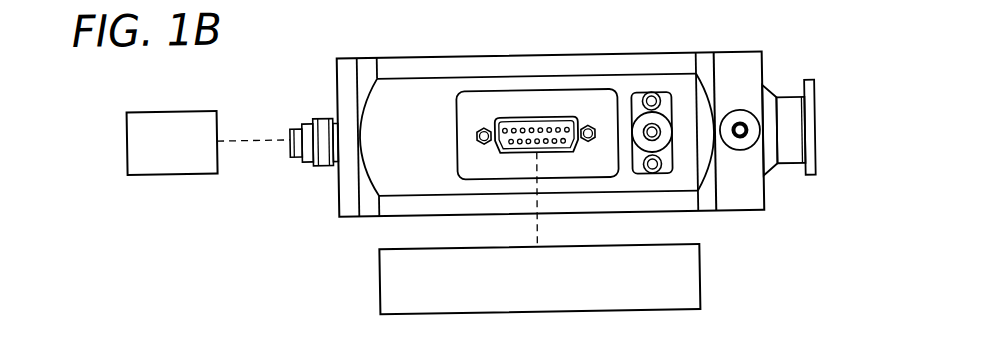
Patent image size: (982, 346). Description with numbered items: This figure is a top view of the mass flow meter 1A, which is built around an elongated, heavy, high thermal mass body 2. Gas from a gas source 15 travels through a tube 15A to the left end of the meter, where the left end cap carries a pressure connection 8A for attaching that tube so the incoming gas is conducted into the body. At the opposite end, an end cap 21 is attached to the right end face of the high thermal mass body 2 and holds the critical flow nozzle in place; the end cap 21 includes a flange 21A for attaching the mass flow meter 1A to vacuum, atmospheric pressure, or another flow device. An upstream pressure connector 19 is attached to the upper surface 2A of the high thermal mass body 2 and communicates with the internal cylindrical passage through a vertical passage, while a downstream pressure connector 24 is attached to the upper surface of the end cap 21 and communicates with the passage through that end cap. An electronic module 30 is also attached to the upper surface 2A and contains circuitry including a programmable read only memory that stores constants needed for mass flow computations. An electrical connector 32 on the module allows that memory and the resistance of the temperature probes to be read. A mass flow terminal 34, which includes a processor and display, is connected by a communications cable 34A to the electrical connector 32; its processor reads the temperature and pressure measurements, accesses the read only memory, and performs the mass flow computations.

The mass flow meter 1A is at (527, 147).
The high thermal mass body 2 is at (395, 204).
The upper surface 2A is at (406, 88).
The pressure connection 8A is at (302, 114).
The gas source 15 is at (173, 104).
The tube 15A is at (267, 132).
The upstream pressure connector 19 is at (672, 132).
The end cap 21 is at (744, 150).
The flange 21A is at (807, 84).
The downstream pressure connector 24 is at (740, 113).
The electronic module 30 is at (455, 111).
The electrical connector 32 is at (507, 127).
The mass flow terminal 34 is at (700, 276).
The communications cable 34A is at (536, 222).